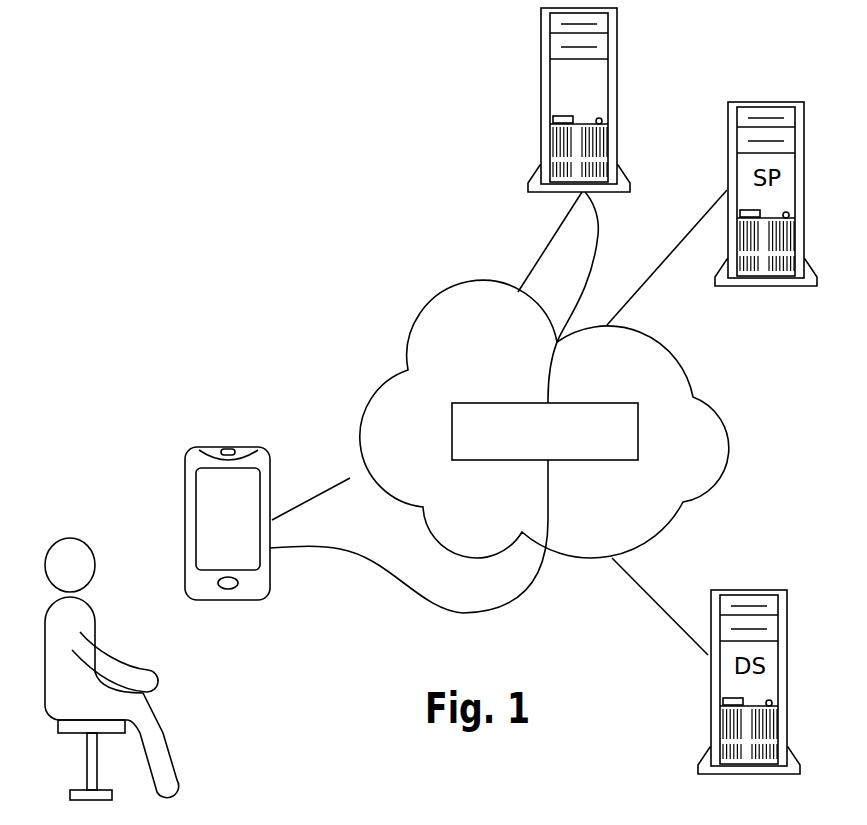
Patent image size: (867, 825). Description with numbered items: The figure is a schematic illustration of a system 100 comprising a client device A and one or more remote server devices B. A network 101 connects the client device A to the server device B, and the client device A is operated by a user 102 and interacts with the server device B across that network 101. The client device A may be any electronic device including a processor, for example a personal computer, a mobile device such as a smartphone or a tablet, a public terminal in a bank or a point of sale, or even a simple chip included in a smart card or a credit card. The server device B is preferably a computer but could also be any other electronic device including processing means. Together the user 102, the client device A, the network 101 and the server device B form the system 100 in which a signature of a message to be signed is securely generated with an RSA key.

The system 100 is at (320, 232).
The network 101 is at (365, 410).
The user 102 is at (70, 558).
The client device A is at (224, 447).
The server device B is at (552, 45).